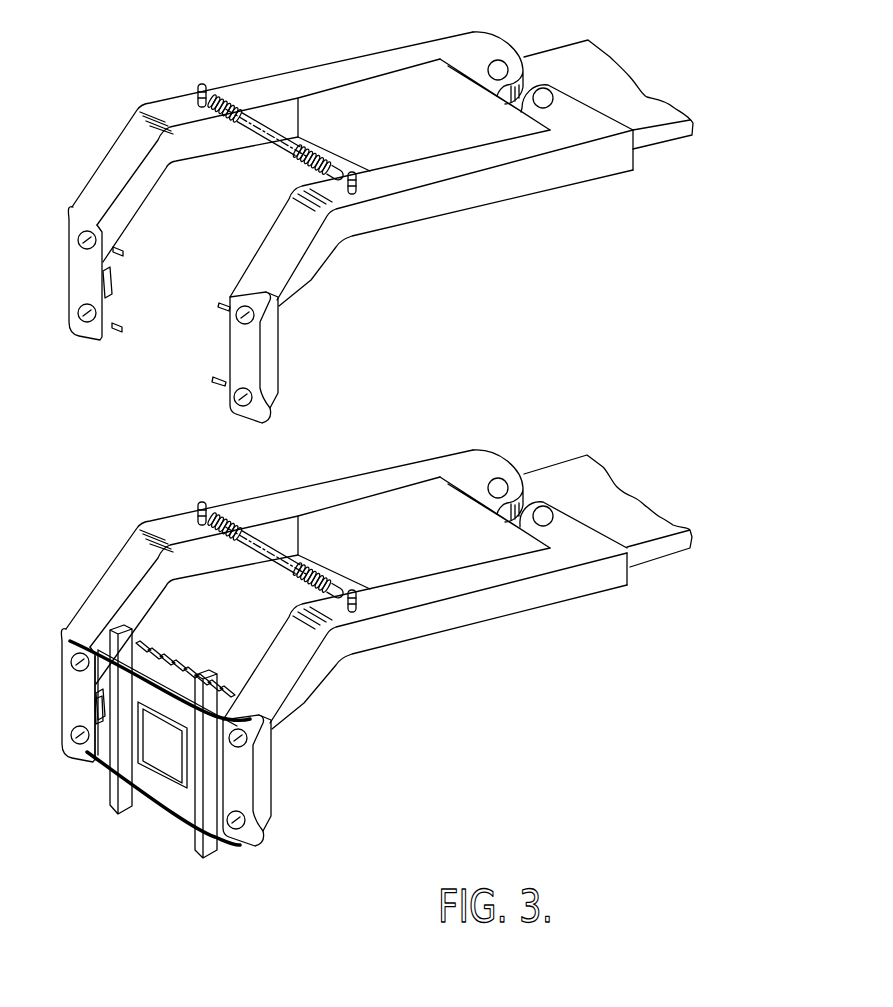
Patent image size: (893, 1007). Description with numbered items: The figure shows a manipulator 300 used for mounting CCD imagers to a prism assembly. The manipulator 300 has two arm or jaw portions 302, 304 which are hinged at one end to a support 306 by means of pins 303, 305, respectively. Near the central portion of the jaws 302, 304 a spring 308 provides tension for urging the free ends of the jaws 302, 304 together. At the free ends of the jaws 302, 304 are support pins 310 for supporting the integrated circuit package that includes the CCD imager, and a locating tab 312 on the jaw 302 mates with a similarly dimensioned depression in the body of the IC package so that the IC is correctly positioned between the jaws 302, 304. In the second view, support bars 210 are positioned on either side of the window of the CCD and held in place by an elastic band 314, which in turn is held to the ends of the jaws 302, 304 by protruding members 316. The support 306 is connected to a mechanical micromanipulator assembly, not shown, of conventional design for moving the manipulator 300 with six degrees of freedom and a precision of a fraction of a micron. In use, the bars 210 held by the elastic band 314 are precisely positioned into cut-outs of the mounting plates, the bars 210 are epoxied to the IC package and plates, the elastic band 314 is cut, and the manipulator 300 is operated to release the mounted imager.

In FIG. 3a, the manipulator 300 is at (530, 283).
In FIG. 3a, the jaw portion 302 is at (139, 111).
In FIG. 3a, the pin 303 is at (500, 61).
In FIG. 3a, the jaw portion 304 is at (352, 240).
In FIG. 3a, the pin 305 is at (549, 92).
In FIG. 3a, the support 306 is at (666, 137).
In FIG. 3a, the spring 308 is at (285, 148).
In FIG. 3a, the support pins 310 is at (227, 304).
In FIG. 3a, the locating tab 312 is at (113, 292).
In FIG. 3b, the elastic band 314 is at (160, 817).
In FIG. 3b, the protruding members 316 is at (62, 747).
In FIG. 3b, the support bars 210 is at (108, 807).